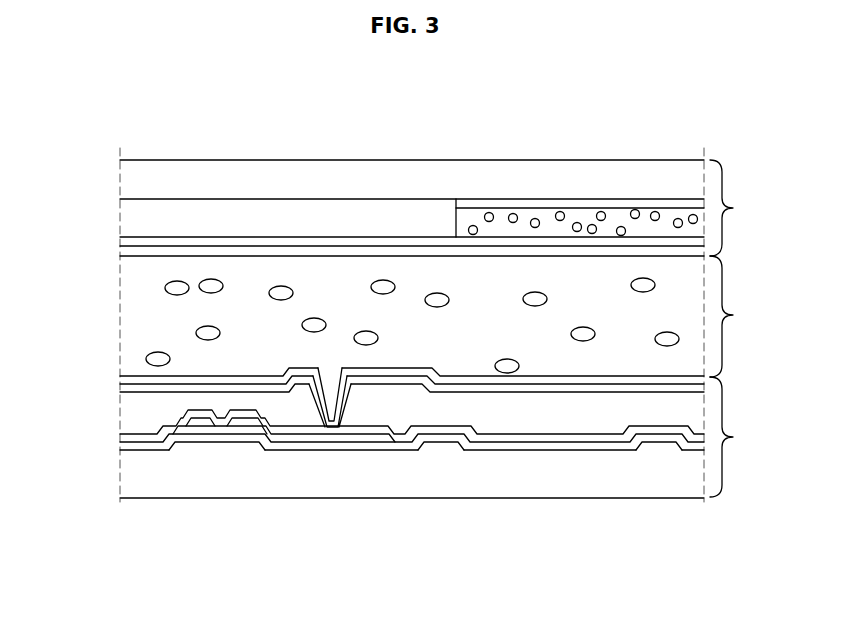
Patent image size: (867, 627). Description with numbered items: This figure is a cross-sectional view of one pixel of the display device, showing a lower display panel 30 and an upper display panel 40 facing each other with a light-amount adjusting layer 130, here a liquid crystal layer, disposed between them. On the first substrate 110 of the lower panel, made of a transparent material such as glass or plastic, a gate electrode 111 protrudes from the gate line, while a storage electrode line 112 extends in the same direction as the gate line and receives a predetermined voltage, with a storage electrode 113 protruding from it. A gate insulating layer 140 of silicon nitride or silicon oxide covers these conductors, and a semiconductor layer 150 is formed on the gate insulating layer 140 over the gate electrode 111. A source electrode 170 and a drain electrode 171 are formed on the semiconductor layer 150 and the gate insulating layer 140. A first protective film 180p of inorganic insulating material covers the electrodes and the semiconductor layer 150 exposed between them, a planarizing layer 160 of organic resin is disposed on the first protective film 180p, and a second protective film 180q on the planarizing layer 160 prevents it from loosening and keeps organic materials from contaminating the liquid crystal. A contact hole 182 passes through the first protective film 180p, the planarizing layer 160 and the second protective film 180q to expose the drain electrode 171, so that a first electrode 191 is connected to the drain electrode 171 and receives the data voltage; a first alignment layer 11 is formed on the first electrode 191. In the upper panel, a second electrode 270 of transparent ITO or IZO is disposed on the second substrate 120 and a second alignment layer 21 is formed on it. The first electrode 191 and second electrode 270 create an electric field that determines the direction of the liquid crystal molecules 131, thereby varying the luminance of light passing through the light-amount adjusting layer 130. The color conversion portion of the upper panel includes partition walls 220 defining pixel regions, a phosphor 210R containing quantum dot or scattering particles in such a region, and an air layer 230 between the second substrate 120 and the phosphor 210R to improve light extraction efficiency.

The first alignment layer 11 is at (132, 377).
The second alignment layer 21 is at (337, 251).
The lower display panel 30 is at (735, 437).
The upper display panel 40 is at (735, 208).
The first substrate 110 is at (593, 485).
The gate electrode 111 is at (182, 451).
The storage electrode line 112 is at (438, 443).
The storage electrode 113 is at (661, 443).
The second substrate 120 is at (603, 182).
The light-amount adjusting layer 130 is at (743, 316).
The liquid crystal molecules 131 is at (168, 290).
The gate insulating layer 140 is at (352, 438).
The semiconductor layer 150 is at (248, 441).
The planarizing layer 160 is at (402, 431).
The source electrode 170 is at (202, 423).
The drain electrode 171 is at (295, 434).
The first protective film 180p is at (556, 435).
The second protective film 180q is at (124, 391).
The contact hole 182 is at (330, 405).
The first electrode 191 is at (402, 369).
The phosphor 210R is at (535, 219).
The partition wall 220 is at (322, 220).
The air layer 230 is at (669, 203).
The second electrode 270 is at (398, 243).